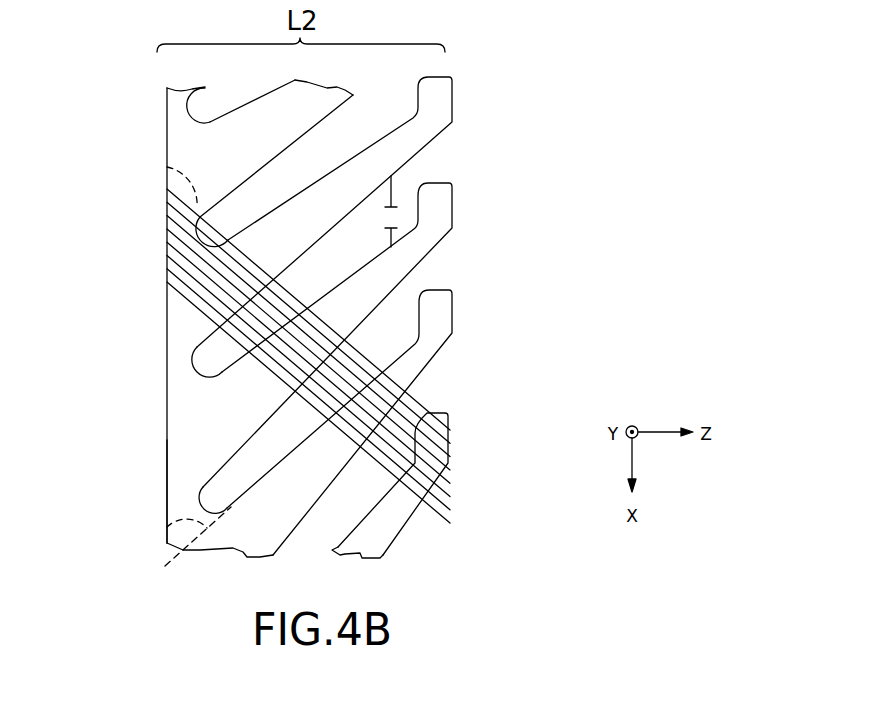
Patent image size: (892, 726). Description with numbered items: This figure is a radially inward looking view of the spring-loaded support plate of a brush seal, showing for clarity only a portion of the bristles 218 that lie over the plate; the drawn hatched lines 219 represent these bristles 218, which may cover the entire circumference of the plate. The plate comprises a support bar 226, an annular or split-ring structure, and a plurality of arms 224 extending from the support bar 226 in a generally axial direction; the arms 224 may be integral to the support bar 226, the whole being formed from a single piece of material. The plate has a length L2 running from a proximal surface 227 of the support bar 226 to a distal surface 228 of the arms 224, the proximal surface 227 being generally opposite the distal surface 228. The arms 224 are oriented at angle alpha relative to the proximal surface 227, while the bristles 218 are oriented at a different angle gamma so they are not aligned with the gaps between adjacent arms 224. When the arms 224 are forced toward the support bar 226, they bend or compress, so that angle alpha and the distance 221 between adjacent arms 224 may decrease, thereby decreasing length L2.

The bristles 218 is at (445, 418).
The layer lines / build direction lines 219 is at (462, 493).
The distance between adjacent arms 221 is at (391, 211).
The arms 224 is at (433, 112).
The support bar 226 is at (195, 416).
The proximal surface 227 is at (168, 471).
The distal surface 228 is at (452, 205).